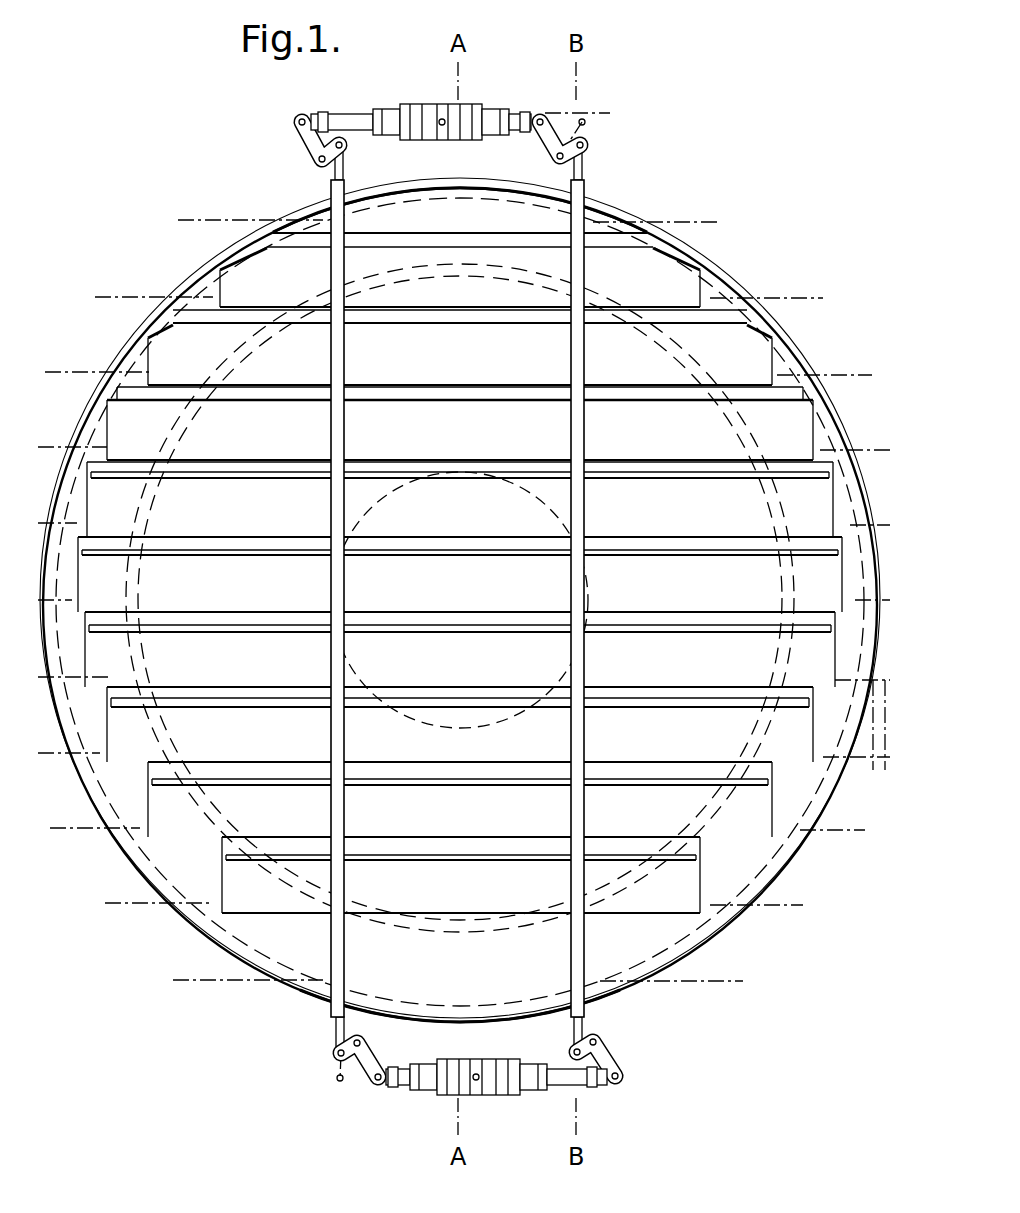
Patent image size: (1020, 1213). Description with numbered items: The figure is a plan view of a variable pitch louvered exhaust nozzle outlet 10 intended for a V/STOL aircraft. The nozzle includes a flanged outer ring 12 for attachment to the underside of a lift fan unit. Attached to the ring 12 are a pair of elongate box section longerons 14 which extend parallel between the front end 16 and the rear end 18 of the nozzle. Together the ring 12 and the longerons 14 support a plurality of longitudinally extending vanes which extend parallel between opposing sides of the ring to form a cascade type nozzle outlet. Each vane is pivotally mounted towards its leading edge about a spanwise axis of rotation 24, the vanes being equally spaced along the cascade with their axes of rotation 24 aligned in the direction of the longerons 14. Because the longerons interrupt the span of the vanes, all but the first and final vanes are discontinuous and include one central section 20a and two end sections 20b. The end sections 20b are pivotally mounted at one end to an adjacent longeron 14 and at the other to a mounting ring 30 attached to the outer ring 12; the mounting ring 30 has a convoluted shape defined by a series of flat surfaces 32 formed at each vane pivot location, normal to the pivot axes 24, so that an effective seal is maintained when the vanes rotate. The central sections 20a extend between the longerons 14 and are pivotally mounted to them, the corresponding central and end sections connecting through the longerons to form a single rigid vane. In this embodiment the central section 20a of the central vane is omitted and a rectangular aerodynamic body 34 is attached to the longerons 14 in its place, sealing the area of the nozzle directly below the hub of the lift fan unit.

The louvered exhaust nozzle outlet 10 is at (684, 82).
The flanged outer ring 12 is at (614, 996).
The elongate box section longerons 14 is at (590, 187).
The front end 16 is at (460, 1022).
The rear end 18 is at (452, 186).
The central vane section 20a is at (480, 371).
The end vane sections 20b is at (312, 371).
The spanwise axis of rotation 24 is at (712, 222).
The mounting ring 30 is at (680, 935).
The flat surfaces 32 is at (703, 873).
The rectangular aerodynamic body 34 is at (475, 595).